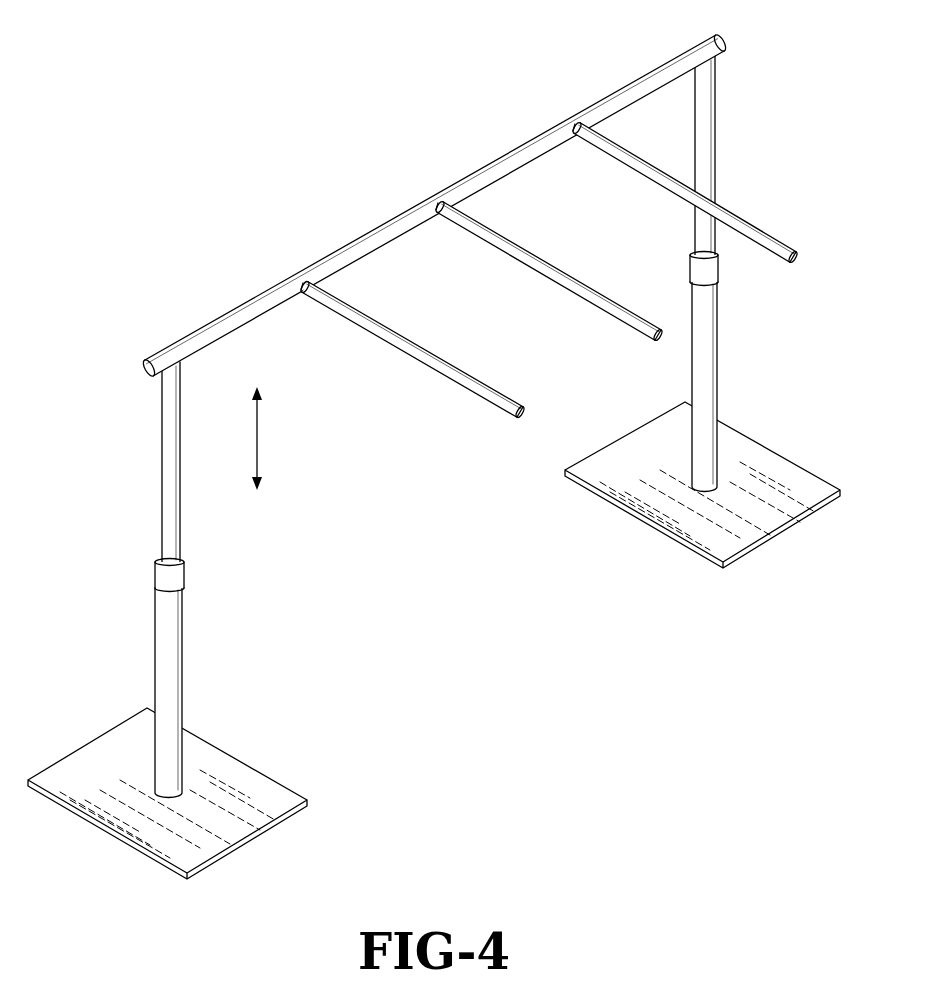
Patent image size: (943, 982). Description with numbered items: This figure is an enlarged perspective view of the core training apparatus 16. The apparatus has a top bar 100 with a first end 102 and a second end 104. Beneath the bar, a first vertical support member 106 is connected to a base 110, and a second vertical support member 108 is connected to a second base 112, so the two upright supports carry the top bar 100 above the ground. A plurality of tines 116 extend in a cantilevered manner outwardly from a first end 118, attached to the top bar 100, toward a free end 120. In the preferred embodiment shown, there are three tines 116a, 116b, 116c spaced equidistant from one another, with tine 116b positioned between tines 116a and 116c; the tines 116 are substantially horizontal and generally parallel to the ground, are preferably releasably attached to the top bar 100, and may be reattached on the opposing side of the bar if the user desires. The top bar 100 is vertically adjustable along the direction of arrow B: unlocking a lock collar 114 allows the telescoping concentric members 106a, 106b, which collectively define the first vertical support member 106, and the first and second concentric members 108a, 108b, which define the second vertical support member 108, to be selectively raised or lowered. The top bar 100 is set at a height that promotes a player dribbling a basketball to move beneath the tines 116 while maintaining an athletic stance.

The core training apparatus 16 is at (342, 132).
The top bar 100 is at (395, 194).
The first end 102 is at (712, 40).
The second end 104 is at (148, 360).
The first vertical support member 106 is at (762, 273).
The telescoping concentric member 106a is at (717, 152).
The telescoping concentric member 106b is at (720, 372).
The second vertical support member 108 is at (108, 580).
The first concentric member 108a is at (160, 470).
The second concentric member 108b is at (156, 656).
The base 110 is at (740, 448).
The second base 112 is at (200, 755).
The lock collar 114 is at (157, 572).
The tines 116 is at (549, 287).
The tine 116a is at (428, 376).
The tine 116b is at (516, 272).
The tine 116c is at (628, 176).
The first end 118 is at (305, 296).
The free end 120 is at (525, 402).